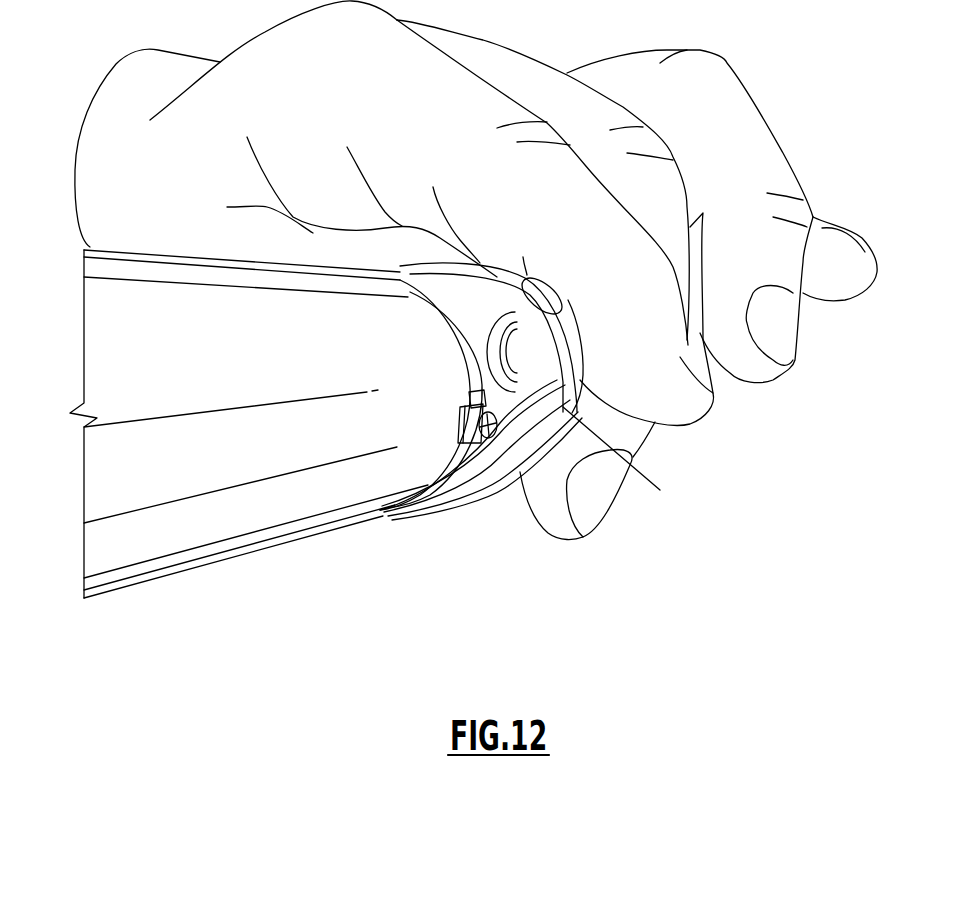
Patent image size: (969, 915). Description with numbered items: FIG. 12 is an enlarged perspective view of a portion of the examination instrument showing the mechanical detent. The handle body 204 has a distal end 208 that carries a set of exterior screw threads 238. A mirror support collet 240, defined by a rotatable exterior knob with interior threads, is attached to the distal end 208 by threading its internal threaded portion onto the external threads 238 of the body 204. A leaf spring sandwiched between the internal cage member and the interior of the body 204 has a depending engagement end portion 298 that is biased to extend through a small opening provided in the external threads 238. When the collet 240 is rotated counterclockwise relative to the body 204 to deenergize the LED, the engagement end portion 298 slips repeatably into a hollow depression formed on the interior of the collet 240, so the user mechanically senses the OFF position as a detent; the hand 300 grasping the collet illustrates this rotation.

The handle body 204 is at (300, 595).
The distal end 208 is at (450, 541).
The exterior screw threads 238 is at (596, 361).
The mirror support collet 240 is at (590, 288).
The engagement end portion 298 is at (502, 561).
The hand 300 is at (683, 497).